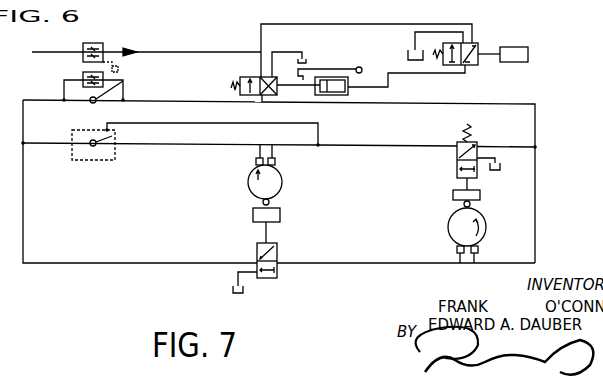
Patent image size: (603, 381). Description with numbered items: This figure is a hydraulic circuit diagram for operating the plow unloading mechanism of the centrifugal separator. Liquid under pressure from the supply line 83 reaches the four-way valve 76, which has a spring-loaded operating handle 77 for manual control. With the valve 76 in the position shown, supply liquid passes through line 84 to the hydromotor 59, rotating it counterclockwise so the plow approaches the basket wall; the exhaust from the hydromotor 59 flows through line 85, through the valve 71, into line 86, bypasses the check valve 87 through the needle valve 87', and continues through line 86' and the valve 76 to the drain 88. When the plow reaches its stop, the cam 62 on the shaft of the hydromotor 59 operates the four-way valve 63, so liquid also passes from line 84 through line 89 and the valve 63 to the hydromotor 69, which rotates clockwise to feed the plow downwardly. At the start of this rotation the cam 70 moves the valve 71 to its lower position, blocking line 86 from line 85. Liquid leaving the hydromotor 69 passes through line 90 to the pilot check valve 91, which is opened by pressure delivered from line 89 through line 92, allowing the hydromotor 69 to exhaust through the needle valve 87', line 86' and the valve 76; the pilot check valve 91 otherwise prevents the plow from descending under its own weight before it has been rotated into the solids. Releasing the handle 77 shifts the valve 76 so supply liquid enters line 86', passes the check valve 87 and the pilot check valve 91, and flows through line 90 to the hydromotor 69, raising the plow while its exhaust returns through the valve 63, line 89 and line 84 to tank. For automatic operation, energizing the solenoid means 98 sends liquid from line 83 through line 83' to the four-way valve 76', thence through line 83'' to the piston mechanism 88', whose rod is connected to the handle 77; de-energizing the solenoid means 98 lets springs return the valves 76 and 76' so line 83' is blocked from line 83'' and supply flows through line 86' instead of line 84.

The supply line 83 is at (146, 43).
The line 83' is at (366, 39).
The line 83'' is at (406, 67).
The line 84 is at (432, 104).
The line 85 is at (367, 263).
The line 86 is at (101, 183).
The line 86' is at (142, 92).
The check valve 87 is at (122, 92).
The needle valve 87' is at (76, 82).
The drain 88 is at (288, 54).
The piston mechanism 88' is at (332, 91).
The line 89 is at (378, 143).
The line 90 is at (210, 145).
The pilot check valve 91 is at (114, 136).
The line 92 is at (197, 123).
The four-way valve 76 is at (251, 80).
The four-way valve 76' is at (474, 41).
The operating handle 77 is at (357, 67).
The solenoid means 98 is at (528, 47).
The hydromotor 69 is at (283, 178).
The cam 70 is at (280, 211).
The valve 71 is at (277, 255).
The four-way valve 63 is at (457, 168).
The cam 62 is at (453, 196).
The hydromotor 59 is at (479, 215).